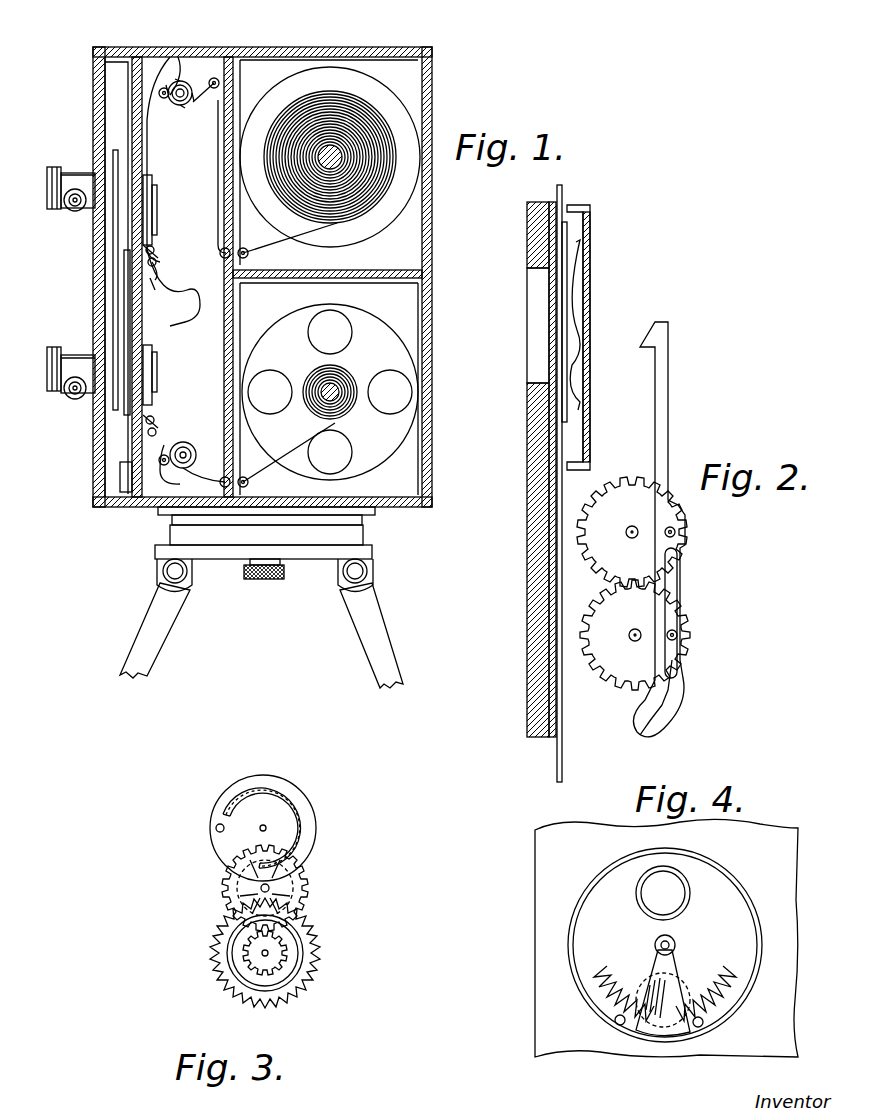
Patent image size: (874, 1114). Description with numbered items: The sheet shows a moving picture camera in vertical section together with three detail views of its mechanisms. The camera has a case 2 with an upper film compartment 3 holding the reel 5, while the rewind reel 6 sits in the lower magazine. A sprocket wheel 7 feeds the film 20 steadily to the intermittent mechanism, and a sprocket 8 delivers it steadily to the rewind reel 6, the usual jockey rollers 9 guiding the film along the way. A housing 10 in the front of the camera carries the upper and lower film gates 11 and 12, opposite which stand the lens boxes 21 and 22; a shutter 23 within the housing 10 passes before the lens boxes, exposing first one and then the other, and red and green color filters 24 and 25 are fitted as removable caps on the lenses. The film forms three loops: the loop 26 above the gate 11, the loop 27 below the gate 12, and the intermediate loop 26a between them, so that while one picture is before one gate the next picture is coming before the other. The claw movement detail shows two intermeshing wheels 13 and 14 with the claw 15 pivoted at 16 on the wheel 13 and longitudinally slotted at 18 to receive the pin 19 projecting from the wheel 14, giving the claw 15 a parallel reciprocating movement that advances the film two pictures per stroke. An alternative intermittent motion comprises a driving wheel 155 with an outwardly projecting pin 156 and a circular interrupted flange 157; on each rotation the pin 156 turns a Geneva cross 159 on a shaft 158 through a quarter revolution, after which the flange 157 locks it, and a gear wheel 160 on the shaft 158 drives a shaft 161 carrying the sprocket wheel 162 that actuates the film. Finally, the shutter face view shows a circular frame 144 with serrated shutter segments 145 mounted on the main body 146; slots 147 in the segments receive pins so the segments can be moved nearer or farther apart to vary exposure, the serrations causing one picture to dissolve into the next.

In FIG. 1, the case 2 is at (342, 47).
In FIG. 1, the upper film compartment 3 is at (420, 96).
In FIG. 1, the reel 5 is at (405, 135).
In FIG. 1, the rewind reel 6 is at (385, 340).
In FIG. 1, the sprocket wheel 7 is at (184, 100).
In FIG. 1, the sprocket 8 is at (186, 450).
In FIG. 1, the jockey rollers 9 is at (164, 100).
In FIG. 1, the housing 10 is at (116, 57).
In FIG. 2, the housing 10 is at (590, 300).
In FIG. 1, the upper film gate 11 is at (155, 190).
In FIG. 2, the upper film gate 11 is at (540, 360).
In FIG. 1, the lower film gate 12 is at (165, 362).
In FIG. 1, the wheel 13 is at (160, 264).
In FIG. 2, the wheel 13 is at (632, 478).
In FIG. 1, the wheel 14 is at (434, 478).
In FIG. 2, the wheel 14 is at (635, 635).
In FIG. 1, the claw 15 is at (152, 246).
In FIG. 2, the claw 15 is at (669, 440).
In FIG. 2, the pivot 16 is at (678, 532).
In FIG. 2, the slot 18 is at (670, 708).
In FIG. 2, the pin 19 is at (680, 638).
In FIG. 1, the film 20 is at (218, 140).
In FIG. 1, the lens box 21 is at (72, 170).
In FIG. 1, the lens box 22 is at (72, 355).
In FIG. 1, the shutter 23 is at (113, 230).
In FIG. 1, the color filter 24 is at (47, 190).
In FIG. 1, the color filter 25 is at (47, 375).
In FIG. 1, the loop 26 is at (178, 60).
In FIG. 1, the intermediate loop 26a is at (178, 296).
In FIG. 1, the loop 27 is at (192, 474).
In FIG. 4, the circular frame 144 is at (662, 864).
In FIG. 4, the shutter segments 145 is at (630, 985).
In FIG. 4, the main body 146 is at (662, 1038).
In FIG. 4, the slots 147 is at (705, 1024).
In FIG. 3, the driving wheel 155 is at (292, 800).
In FIG. 3, the pin 156 is at (216, 832).
In FIG. 3, the circular interrupted flange 157 is at (265, 800).
In FIG. 3, the shaft 158 is at (270, 888).
In FIG. 3, the Geneva cross 159 is at (295, 882).
In FIG. 3, the gear wheel 160 is at (295, 903).
In FIG. 3, the shaft 161 is at (262, 958).
In FIG. 3, the sprocket wheel 162 is at (305, 972).